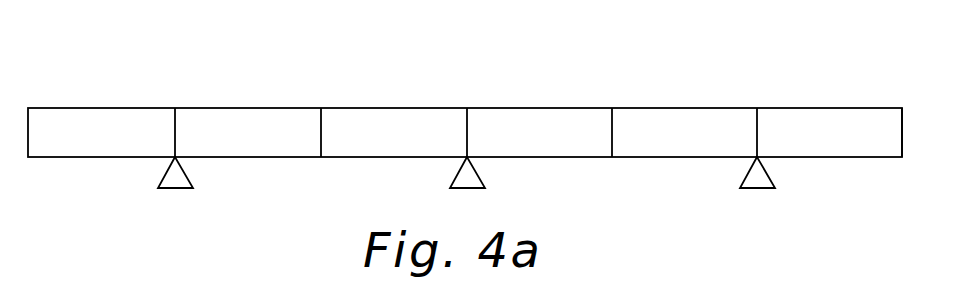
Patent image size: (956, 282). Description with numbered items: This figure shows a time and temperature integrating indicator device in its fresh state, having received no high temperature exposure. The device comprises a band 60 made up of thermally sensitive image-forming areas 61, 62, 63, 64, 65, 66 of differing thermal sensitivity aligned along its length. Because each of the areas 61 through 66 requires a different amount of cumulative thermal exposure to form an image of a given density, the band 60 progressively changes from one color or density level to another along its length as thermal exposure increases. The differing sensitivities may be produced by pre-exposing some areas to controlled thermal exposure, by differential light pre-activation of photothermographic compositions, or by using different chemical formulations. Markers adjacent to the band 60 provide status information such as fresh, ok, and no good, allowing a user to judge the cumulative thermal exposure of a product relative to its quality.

The band 60 is at (72, 98).
The thermally sensitive image-forming area 61 is at (138, 115).
The thermally sensitive image-forming area 62 is at (295, 115).
The thermally sensitive image-forming area 63 is at (433, 115).
The thermally sensitive image-forming area 64 is at (578, 115).
The thermally sensitive image-forming area 65 is at (719, 115).
The thermally sensitive image-forming area 66 is at (871, 115).